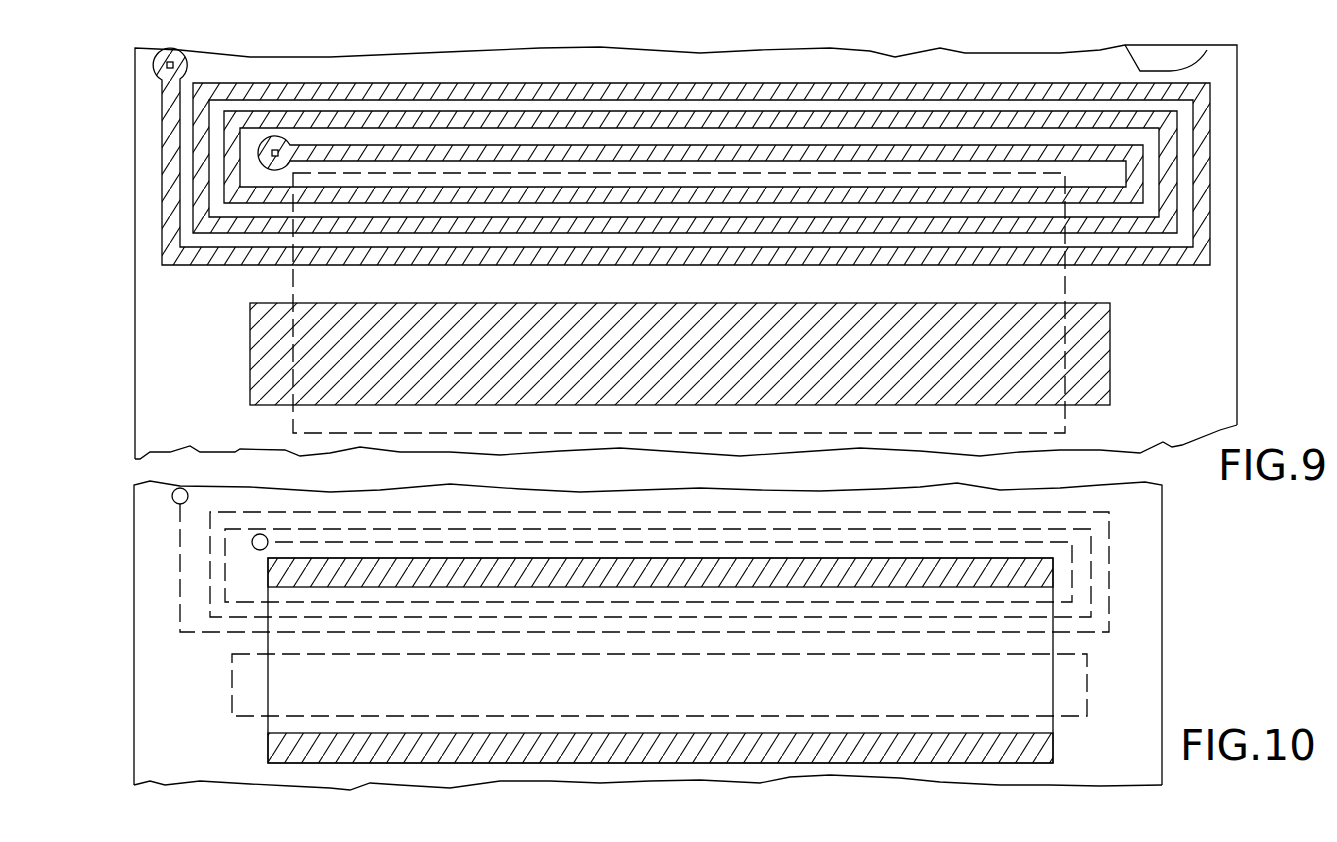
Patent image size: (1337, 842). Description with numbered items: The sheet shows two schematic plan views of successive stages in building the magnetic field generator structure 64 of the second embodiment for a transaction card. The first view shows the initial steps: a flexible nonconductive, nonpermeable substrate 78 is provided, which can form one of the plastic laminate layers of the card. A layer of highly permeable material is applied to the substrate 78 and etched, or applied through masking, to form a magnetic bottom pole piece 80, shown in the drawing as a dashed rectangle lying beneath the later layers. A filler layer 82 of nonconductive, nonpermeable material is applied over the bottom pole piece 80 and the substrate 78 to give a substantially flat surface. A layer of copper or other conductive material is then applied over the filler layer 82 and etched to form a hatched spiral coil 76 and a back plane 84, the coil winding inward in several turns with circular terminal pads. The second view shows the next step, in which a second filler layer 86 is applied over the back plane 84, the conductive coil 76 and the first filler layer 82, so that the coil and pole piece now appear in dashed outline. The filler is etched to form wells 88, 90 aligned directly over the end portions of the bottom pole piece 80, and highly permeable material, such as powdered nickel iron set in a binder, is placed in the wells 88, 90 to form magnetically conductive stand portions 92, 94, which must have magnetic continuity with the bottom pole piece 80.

In FIG. 9, the magnetic field generator structure 64 is at (1244, 160).
In FIG. 10, the magnetic field generator structure 64 is at (1145, 579).
In FIG. 9, the spiral coil 76 is at (1225, 111).
In FIG. 10, the spiral coil 76 is at (1124, 537).
In FIG. 9, the substrate 78 is at (1174, 60).
In FIG. 9, the bottom pole piece 80 is at (293, 283).
In FIG. 10, the bottom pole piece 80 is at (1057, 665).
In FIG. 9, the filler layer 82 is at (833, 77).
In FIG. 9, the back plane 84 is at (250, 341).
In FIG. 10, the back plane 84 is at (451, 507).
In FIG. 10, the second filler layer 86 is at (193, 716).
In FIG. 10, the well 88 is at (877, 763).
In FIG. 10, the well 90 is at (947, 558).
In FIG. 10, the magnetically conductive stand portion 92 is at (802, 742).
In FIG. 10, the magnetically conductive stand portion 94 is at (865, 558).